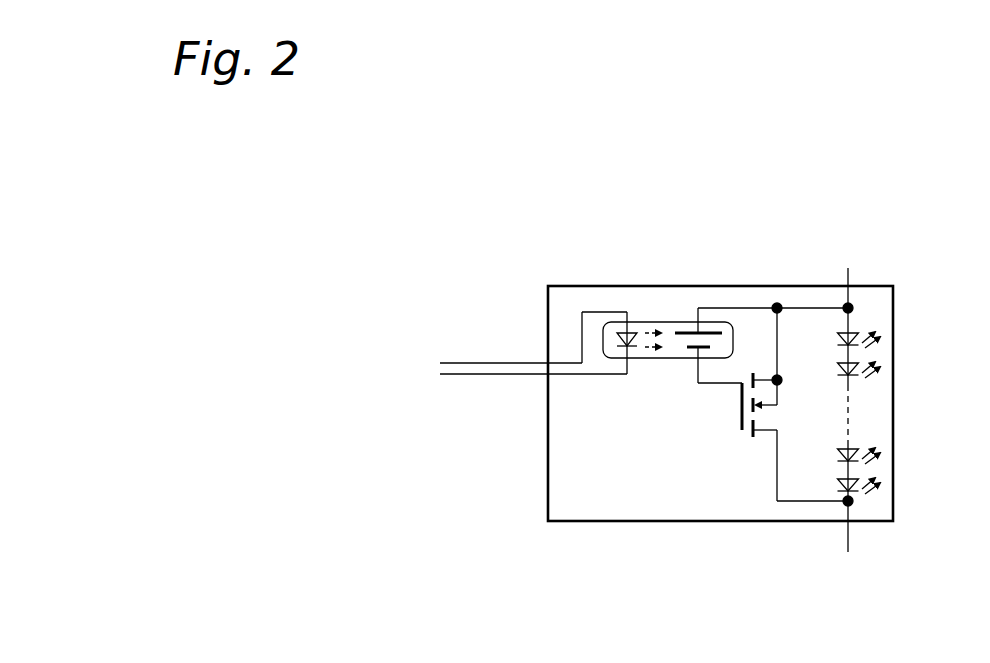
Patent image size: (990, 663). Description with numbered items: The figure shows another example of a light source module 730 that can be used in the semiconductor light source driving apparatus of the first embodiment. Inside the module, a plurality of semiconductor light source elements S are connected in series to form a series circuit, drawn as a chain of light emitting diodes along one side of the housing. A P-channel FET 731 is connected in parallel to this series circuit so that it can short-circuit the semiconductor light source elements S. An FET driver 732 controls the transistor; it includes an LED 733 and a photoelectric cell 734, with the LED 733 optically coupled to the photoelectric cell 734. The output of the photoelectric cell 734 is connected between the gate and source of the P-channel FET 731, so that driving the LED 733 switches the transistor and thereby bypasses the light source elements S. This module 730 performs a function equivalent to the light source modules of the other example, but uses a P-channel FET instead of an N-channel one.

The light source module 730 is at (893, 427).
The P-channel FET 731 is at (725, 428).
The FET driver 732 is at (645, 336).
The LED 733 is at (623, 352).
The photoelectric cell 734 is at (693, 353).
The semiconductor light source elements S is at (883, 345).